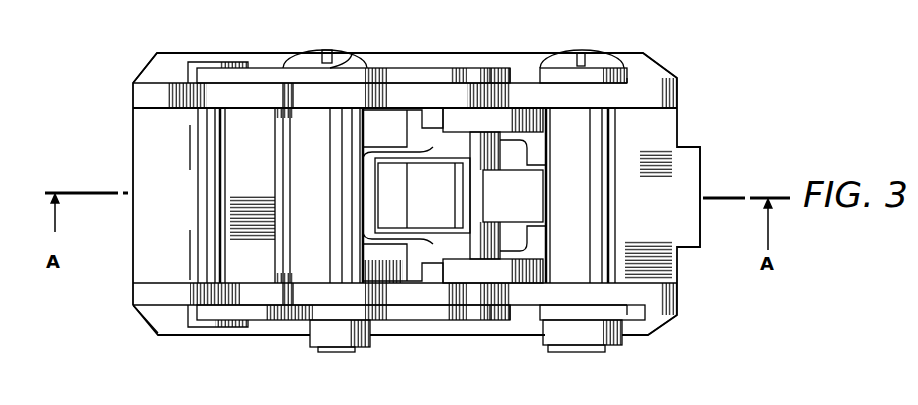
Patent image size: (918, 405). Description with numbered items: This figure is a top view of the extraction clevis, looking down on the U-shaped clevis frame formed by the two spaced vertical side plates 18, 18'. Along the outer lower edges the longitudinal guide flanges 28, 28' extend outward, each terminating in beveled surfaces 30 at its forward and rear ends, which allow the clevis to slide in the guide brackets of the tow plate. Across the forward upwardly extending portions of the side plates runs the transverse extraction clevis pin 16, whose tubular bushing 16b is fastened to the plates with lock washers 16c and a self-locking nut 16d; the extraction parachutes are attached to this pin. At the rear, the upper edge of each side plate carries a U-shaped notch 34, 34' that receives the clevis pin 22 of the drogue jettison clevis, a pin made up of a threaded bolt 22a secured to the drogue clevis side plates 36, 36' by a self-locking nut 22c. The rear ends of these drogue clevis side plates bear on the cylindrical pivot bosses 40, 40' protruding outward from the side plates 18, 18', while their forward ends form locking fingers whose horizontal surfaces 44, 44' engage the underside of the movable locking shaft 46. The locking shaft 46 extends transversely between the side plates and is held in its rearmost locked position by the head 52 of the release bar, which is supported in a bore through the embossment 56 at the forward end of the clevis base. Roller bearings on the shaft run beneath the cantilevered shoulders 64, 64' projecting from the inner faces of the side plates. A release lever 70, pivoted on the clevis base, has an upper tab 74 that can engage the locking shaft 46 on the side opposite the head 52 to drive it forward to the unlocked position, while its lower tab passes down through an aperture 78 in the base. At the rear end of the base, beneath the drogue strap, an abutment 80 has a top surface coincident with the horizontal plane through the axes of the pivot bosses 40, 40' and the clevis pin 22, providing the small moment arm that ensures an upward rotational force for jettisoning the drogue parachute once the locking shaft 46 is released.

The extraction clevis pin 16 is at (596, 226).
The tubular bushing 16b is at (596, 148).
The lock washers 16c is at (625, 70).
The self-locking nut 16d is at (590, 336).
The side plate 18 is at (706, 92).
The side plate 18' is at (699, 294).
The clevis pin 22 is at (312, 170).
The threaded bolt 22a is at (318, 50).
The self-locking nut 22c is at (300, 340).
The longitudinal guide flange 28 is at (475, 53).
The longitudinal guide flange 28' is at (353, 339).
The beveled surface 30 is at (157, 59).
The U-shaped notch 34 is at (265, 127).
The U-shaped notch 34' is at (265, 269).
The drogue clevis side plate 36 is at (386, 53).
The drogue clevis side plate 36' is at (390, 345).
The pivot boss 40 is at (218, 53).
The pivot boss 40' is at (212, 339).
The horizontal surface 44 is at (509, 53).
The horizontal surface 44' is at (497, 339).
The locking shaft 46 is at (482, 232).
The head 52 is at (532, 198).
The embossment 56 is at (688, 168).
The cantilevered shoulder 64 is at (499, 188).
The cantilevered shoulder 64' is at (500, 268).
The release lever 70 is at (447, 209).
The upper tab 74 is at (375, 200).
The aperture 78 is at (385, 160).
The abutment 80 is at (165, 136).